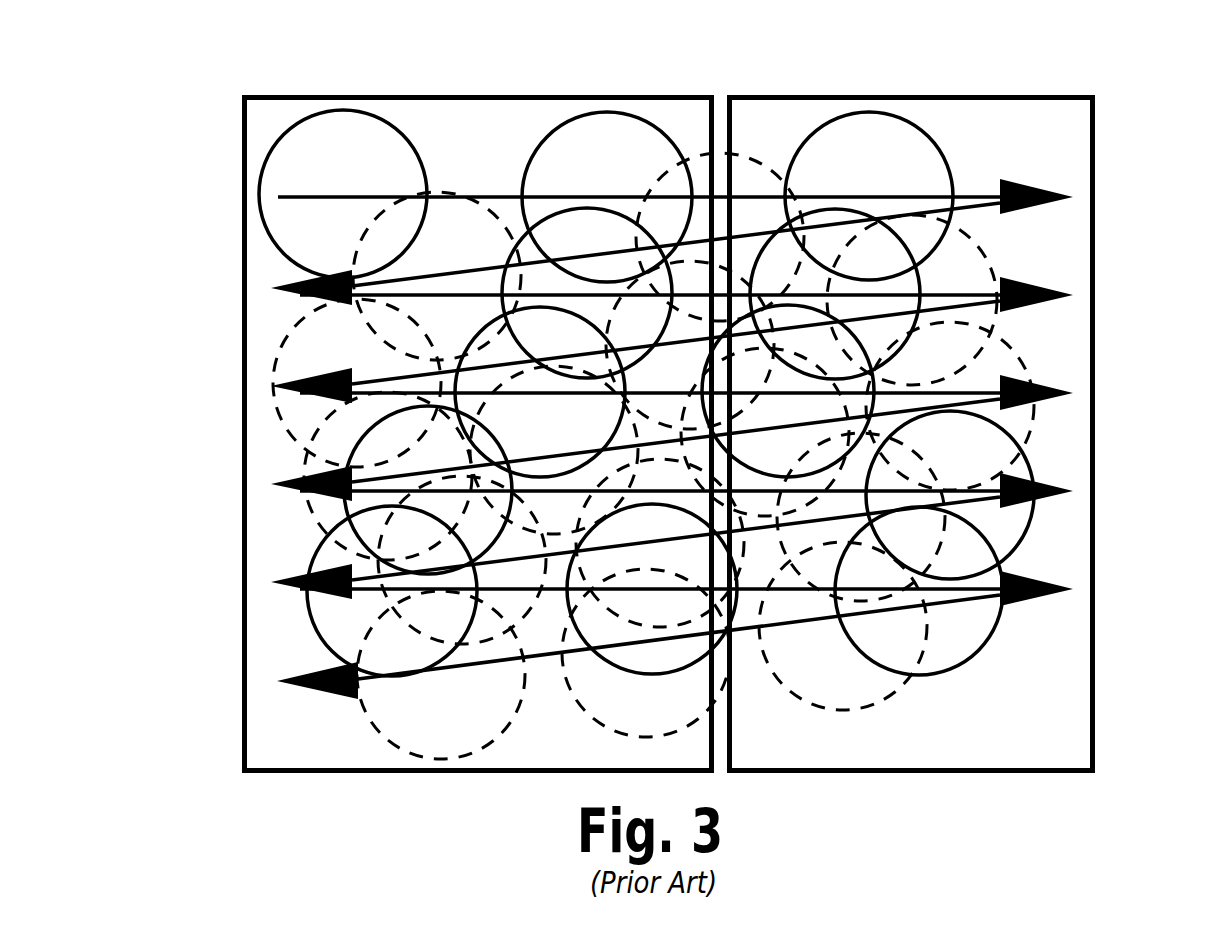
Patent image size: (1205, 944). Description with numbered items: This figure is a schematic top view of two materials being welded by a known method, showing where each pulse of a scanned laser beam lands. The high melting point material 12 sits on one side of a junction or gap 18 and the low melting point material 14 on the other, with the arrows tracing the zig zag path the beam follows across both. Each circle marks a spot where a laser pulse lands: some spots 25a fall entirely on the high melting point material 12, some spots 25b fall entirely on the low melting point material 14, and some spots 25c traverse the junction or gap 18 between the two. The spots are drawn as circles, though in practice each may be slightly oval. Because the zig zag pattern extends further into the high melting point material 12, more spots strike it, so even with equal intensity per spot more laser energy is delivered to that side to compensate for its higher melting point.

The high melting point material 12 is at (302, 745).
The low melting point material 14 is at (1047, 740).
The junction or gap 18 is at (713, 773).
The spots landing entirely on high melting point material 25a is at (268, 153).
The spots landing entirely on low melting point material 25b is at (937, 157).
The spots traversing the junction 25c is at (502, 197).